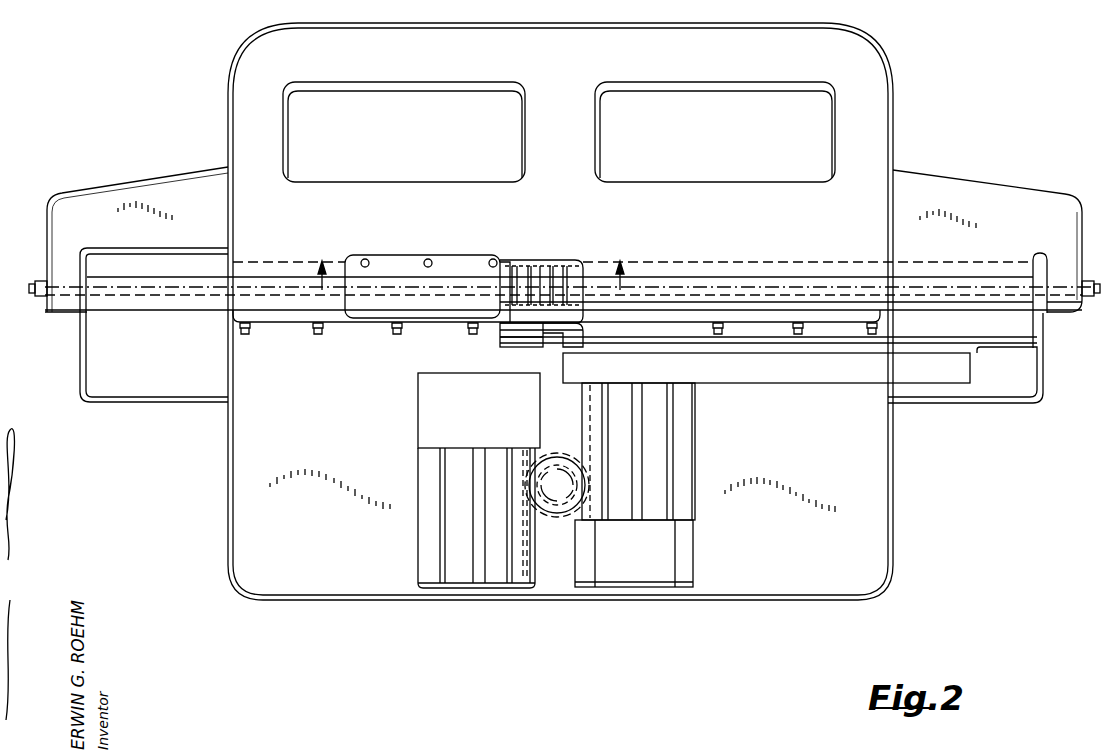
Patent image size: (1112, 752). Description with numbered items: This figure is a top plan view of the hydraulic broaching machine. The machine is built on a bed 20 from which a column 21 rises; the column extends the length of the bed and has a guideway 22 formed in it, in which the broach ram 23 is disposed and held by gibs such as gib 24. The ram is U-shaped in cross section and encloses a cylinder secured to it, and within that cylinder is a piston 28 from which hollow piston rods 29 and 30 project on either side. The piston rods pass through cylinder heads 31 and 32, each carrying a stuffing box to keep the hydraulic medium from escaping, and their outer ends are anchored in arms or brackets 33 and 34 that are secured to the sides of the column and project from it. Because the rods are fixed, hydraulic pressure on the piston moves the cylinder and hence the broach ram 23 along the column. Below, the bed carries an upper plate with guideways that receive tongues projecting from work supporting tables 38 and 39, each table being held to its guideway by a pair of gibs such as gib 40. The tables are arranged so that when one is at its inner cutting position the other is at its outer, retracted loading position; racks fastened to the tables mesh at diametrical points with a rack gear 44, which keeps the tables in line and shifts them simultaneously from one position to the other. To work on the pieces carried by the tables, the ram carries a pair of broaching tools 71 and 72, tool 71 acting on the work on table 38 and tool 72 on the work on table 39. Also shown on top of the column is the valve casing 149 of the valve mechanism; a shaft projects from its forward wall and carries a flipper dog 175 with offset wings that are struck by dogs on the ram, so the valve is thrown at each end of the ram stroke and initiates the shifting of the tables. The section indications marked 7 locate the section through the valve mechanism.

The bed 20 is at (888, 490).
The column 21 is at (875, 148).
The guideway 22 is at (738, 256).
The broach ram 23 is at (1003, 327).
The gib 24 is at (276, 325).
The piston 28 is at (549, 268).
The piston rod 29 is at (270, 270).
The piston rod 30 is at (811, 277).
The cylinder head 31 is at (516, 249).
The cylinder head 32 is at (1056, 250).
The bracket 33 is at (103, 175).
The bracket 34 is at (1072, 182).
The work supporting table 38 is at (695, 432).
The work supporting table 39 is at (428, 473).
The gib 40 is at (682, 547).
The rack gear 44 is at (566, 456).
The broaching tool 71 is at (944, 373).
The broaching tool 72 is at (563, 372).
The valve casing 149 is at (430, 247).
The flipper dog 175 is at (549, 345).
The section line 7 is at (468, 265).